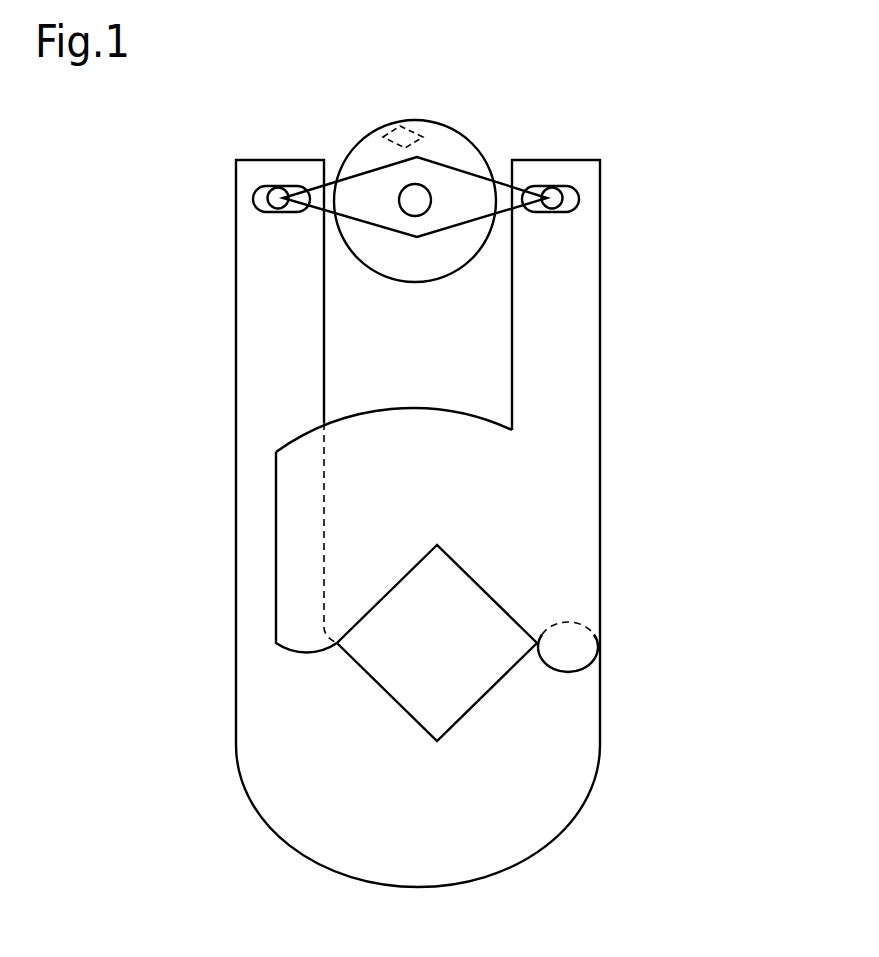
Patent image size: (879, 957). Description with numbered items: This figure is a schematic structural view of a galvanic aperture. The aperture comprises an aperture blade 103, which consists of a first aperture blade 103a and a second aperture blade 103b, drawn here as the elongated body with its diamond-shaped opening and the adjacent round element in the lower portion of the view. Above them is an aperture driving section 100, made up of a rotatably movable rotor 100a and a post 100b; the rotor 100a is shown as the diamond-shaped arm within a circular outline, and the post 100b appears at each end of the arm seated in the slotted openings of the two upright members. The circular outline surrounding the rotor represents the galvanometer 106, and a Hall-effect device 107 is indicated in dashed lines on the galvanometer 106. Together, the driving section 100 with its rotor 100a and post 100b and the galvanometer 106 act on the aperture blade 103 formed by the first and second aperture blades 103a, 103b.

The aperture driving section 100 is at (740, 170).
The rotor 100a is at (470, 185).
The post 100b is at (280, 203).
The aperture blade 103 is at (752, 592).
The first aperture blade 103a is at (548, 514).
The second aperture blade 103b is at (555, 727).
The galvanometer 106 is at (362, 163).
The Hall-effect device 107 is at (397, 123).